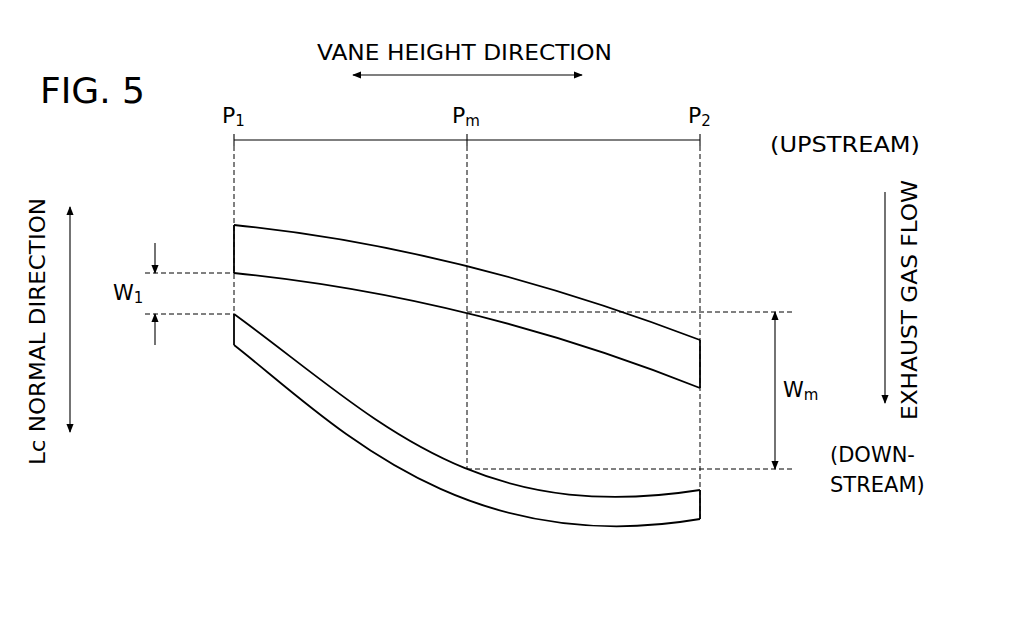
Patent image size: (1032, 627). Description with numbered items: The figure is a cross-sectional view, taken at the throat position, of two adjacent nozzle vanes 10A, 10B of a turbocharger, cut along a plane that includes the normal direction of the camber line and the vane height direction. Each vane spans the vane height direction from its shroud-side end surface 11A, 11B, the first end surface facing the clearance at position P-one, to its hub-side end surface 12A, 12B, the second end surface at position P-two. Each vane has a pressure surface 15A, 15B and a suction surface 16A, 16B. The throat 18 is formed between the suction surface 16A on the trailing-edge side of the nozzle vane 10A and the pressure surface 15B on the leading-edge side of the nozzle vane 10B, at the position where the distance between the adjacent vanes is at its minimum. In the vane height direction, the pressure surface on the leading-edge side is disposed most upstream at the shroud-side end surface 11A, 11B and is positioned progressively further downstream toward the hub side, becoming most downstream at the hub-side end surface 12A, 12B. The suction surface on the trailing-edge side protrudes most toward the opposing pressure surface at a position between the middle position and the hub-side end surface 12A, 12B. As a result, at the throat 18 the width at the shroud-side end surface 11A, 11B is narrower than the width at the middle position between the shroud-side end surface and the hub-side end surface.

The nozzle vane 10A is at (472, 449).
The nozzle vane 10B is at (471, 285).
The shroud-side end surface 11A is at (234, 330).
The shroud-side end surface 11B is at (234, 245).
The hub-side end surface 12A is at (703, 500).
The hub-side end surface 12B is at (702, 362).
The pressure surface 15A is at (377, 455).
The pressure surface 15B is at (349, 285).
The suction surface 16A is at (382, 425).
The suction surface 16B is at (378, 242).
The throat 18 is at (567, 410).